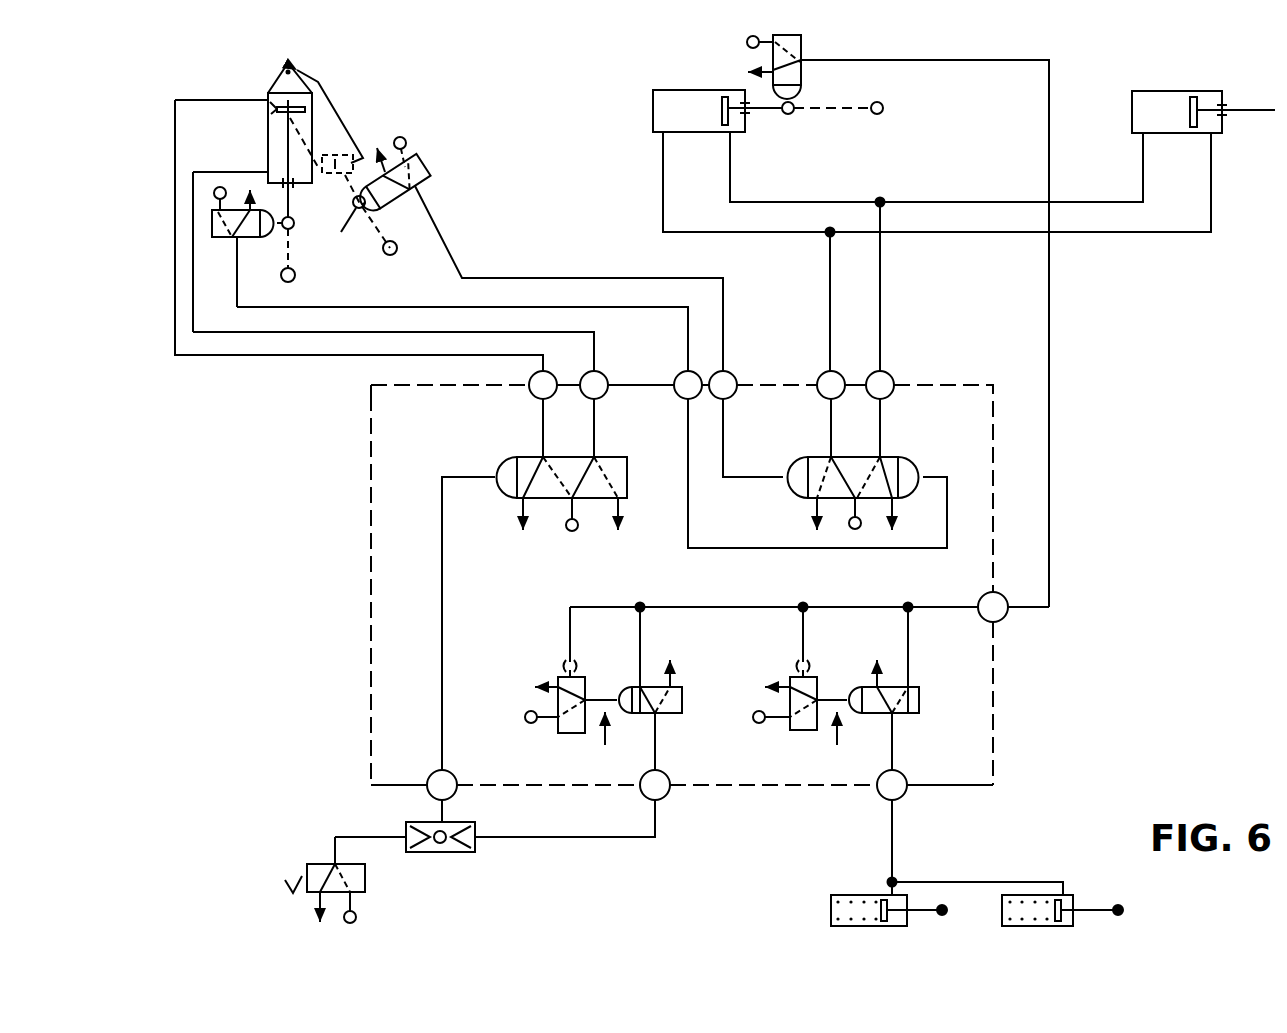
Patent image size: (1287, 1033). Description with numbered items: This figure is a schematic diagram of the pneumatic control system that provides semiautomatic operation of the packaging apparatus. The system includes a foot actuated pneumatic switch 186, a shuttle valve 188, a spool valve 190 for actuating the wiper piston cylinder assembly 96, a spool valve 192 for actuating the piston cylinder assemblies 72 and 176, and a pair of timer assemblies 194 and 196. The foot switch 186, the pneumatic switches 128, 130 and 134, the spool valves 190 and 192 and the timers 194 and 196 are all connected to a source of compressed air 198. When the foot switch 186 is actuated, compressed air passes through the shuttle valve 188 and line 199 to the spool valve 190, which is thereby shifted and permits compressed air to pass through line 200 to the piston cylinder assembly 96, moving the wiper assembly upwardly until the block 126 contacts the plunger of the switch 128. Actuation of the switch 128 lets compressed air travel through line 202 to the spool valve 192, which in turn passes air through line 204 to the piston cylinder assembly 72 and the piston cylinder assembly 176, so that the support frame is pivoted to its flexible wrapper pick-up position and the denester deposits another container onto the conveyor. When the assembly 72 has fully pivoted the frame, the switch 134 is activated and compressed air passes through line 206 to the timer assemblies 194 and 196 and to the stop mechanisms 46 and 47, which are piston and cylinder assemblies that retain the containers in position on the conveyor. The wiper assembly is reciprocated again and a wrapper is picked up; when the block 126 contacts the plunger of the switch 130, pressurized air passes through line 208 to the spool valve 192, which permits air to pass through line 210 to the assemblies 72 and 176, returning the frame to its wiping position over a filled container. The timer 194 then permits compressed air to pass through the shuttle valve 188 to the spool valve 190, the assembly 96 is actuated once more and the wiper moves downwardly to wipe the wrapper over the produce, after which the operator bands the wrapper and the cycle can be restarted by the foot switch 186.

The stop mechanism 46 is at (840, 893).
The stop mechanism 47 is at (1005, 893).
The piston cylinder assembly 72 is at (680, 90).
The piston cylinder assembly 96 is at (268, 118).
The block 126 is at (296, 226).
The pneumatic switch 128 is at (250, 240).
The pneumatic switch 130 is at (420, 163).
The pneumatic switch 134 is at (805, 62).
The piston cylinder assembly 176 is at (1196, 92).
The foot actuated pneumatic switch 186 is at (307, 872).
The shuttle valve 188 is at (452, 855).
The spool valve 190 is at (505, 498).
The spool valve 192 is at (915, 462).
The timer assembly 194 is at (608, 713).
The timer assembly 196 is at (842, 713).
The source of compressed air 198 is at (220, 187).
The line 199 is at (442, 637).
The line 200 is at (412, 332).
The line 202 is at (578, 308).
The line 204 is at (880, 285).
The line 206 is at (1055, 85).
The line 208 is at (548, 278).
The line 210 is at (831, 288).